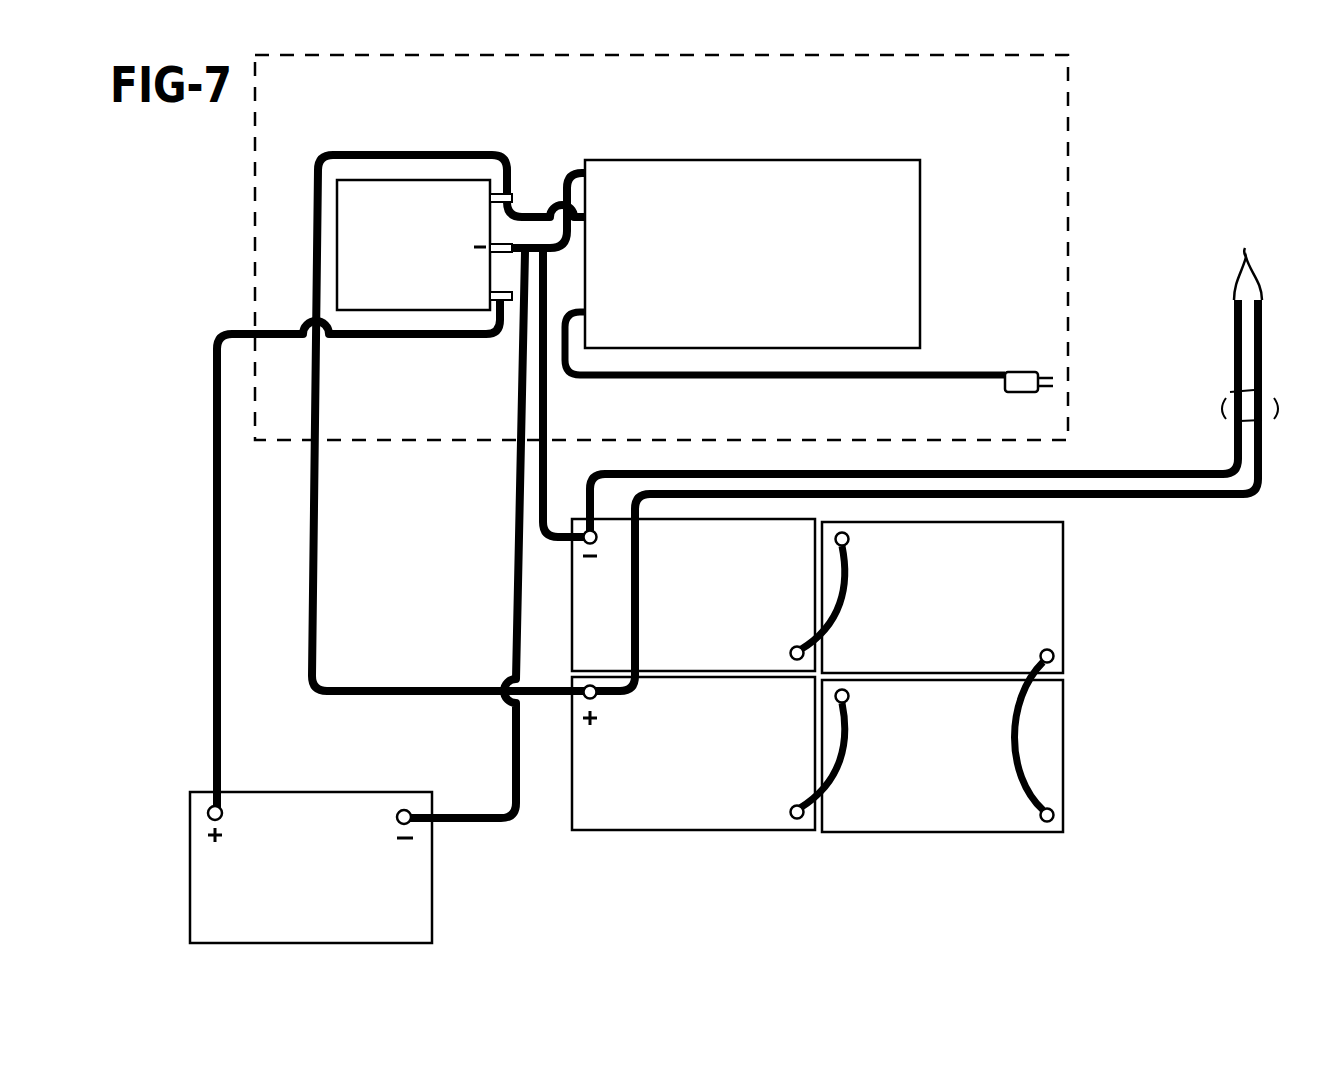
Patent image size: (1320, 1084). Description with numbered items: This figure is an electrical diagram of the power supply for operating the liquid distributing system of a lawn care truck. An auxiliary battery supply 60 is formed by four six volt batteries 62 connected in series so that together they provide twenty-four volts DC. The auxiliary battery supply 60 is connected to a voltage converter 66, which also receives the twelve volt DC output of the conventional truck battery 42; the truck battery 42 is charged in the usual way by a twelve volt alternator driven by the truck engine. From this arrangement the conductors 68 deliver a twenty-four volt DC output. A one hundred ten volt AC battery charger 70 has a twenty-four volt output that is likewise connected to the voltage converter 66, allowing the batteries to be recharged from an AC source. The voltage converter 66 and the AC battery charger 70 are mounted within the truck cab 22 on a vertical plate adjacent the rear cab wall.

The cab 22 is at (1069, 158).
The truck battery 42 is at (315, 800).
The auxiliary battery supply 60 is at (876, 692).
The batteries 62 is at (730, 628).
The voltage converter 66 is at (400, 258).
The conductors 68 is at (1250, 320).
The AC battery charger 70 is at (920, 249).